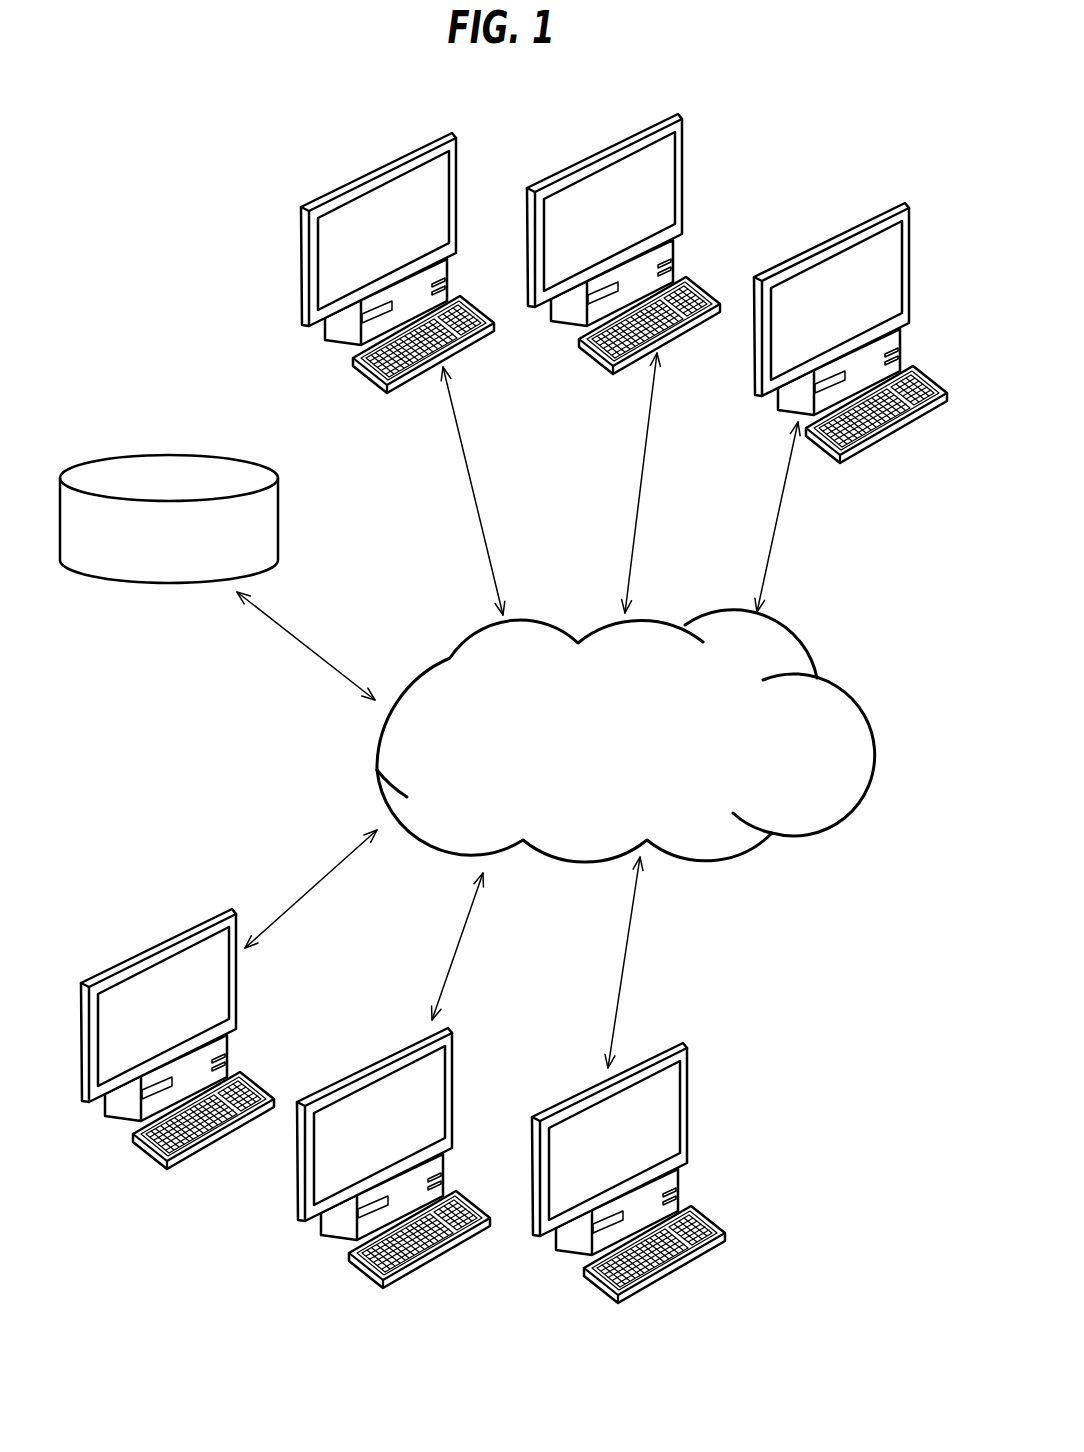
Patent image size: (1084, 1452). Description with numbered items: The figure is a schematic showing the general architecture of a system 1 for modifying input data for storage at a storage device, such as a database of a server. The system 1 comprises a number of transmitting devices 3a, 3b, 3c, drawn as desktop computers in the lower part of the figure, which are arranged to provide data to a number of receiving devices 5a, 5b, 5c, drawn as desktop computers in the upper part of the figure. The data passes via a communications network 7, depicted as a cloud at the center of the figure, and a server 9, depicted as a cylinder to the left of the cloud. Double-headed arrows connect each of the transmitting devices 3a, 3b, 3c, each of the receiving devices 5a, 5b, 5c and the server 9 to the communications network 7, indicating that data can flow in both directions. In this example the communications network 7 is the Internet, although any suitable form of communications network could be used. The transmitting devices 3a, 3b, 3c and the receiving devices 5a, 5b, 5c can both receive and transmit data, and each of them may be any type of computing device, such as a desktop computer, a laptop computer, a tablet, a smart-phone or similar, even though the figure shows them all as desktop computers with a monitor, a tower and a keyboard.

The system 1 is at (780, 918).
The transmitting device 3a is at (183, 1160).
The transmitting device 3b is at (423, 1260).
The transmitting device 3c is at (672, 1267).
The receiving device 5a is at (342, 183).
The receiving device 5b is at (588, 160).
The receiving device 5c is at (833, 240).
The communications network 7 is at (378, 800).
The server 9 is at (152, 453).